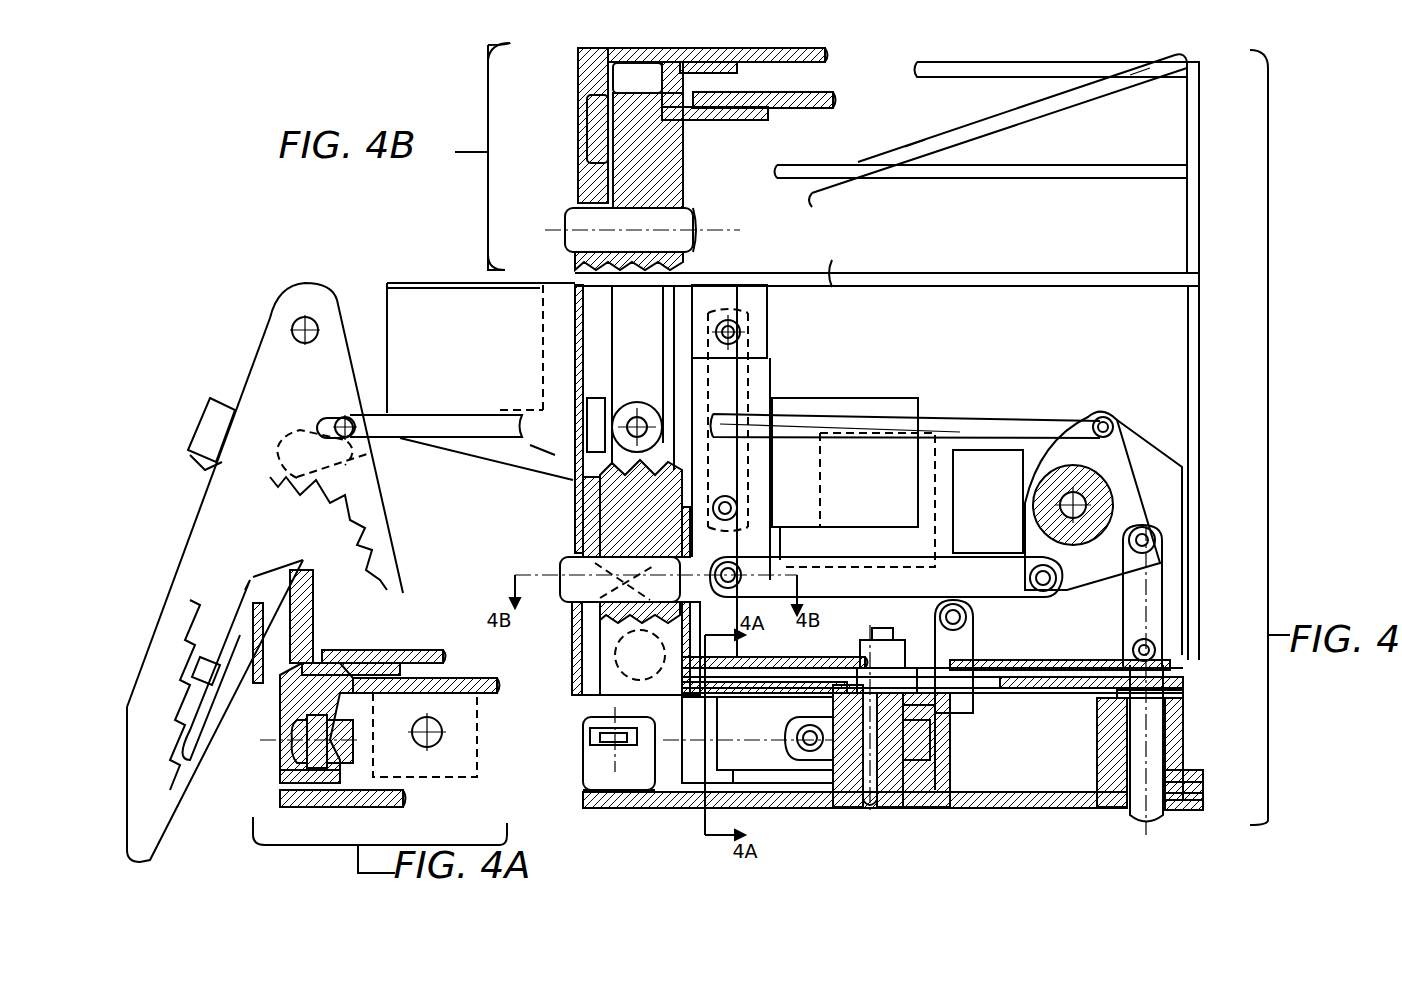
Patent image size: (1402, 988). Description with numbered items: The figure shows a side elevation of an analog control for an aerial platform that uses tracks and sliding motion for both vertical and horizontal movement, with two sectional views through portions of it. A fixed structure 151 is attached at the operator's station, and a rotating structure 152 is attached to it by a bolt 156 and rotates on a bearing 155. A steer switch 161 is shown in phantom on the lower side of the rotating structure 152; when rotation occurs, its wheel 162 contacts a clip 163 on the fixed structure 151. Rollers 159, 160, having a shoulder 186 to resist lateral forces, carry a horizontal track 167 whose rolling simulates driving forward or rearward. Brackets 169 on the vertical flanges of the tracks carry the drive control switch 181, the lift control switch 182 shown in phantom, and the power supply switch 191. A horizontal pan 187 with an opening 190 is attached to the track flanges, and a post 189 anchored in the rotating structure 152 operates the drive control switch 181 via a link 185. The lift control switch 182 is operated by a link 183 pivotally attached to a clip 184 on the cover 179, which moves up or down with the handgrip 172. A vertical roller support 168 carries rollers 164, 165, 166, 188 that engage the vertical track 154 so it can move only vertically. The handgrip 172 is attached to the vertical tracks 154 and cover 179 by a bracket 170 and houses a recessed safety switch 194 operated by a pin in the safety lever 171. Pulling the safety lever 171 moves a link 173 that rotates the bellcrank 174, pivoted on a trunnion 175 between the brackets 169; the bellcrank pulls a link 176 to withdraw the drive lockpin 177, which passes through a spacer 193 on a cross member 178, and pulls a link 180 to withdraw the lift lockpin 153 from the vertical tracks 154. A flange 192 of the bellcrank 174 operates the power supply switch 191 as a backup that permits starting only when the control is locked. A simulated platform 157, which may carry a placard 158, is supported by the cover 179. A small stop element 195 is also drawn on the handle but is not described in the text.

In FIG. 4, the fixed structure 151 is at (1000, 810).
In FIG. 4A, the fixed structure 151 is at (325, 810).
In FIG. 4, the rotating structure 152 is at (965, 795).
In FIG. 4B, the lift lockpin 153 is at (563, 226).
In FIG. 4, the lift lockpin 153 is at (565, 597).
In FIG. 4B, the vertical tracks 154 is at (577, 108).
In FIG. 4, the vertical tracks 154 is at (577, 491).
In FIG. 4, the bearing 155 is at (905, 800).
In FIG. 4, the bolt 156 is at (880, 810).
In FIG. 4, the simulated platform 157 is at (1185, 228).
In FIG. 4, the placard 158 is at (995, 112).
In FIG. 4, the roller 159 is at (1085, 790).
In FIG. 4, the roller 160 is at (790, 760).
In FIG. 4A, the roller 160 is at (350, 773).
In FIG. 4, the steer switch 161 is at (770, 800).
In FIG. 4A, the steer switch 161 is at (430, 777).
In FIG. 4, the wheel 162 is at (590, 755).
In FIG. 4, the clip 163 is at (580, 785).
In FIG. 4B, the rollers 164 is at (688, 133).
In FIG. 4, the rollers 164 is at (580, 663).
In FIG. 4, the rollers 165 is at (625, 402).
In FIG. 4B, the rollers 166 is at (585, 168).
In FIG. 4, the rollers 166 is at (585, 568).
In FIG. 4, the horizontal track 167 is at (690, 795).
In FIG. 4A, the horizontal track 167 is at (280, 758).
In FIG. 4B, the vertical roller support 168 is at (683, 168).
In FIG. 4, the vertical roller support 168 is at (600, 512).
In FIG. 4B, the bracket 169 is at (825, 110).
In FIG. 4, the bracket 169 is at (833, 415).
In FIG. 4, the bracket 170 is at (455, 280).
In FIG. 4, the safety lever 171 is at (395, 497).
In FIG. 4, the handgrip 172 is at (195, 535).
In FIG. 4, the link 173 is at (410, 440).
In FIG. 4, the bellcrank 174 is at (1125, 422).
In FIG. 4, the trunnion 175 is at (1073, 545).
In FIG. 4, the link 176 is at (1120, 628).
In FIG. 4, the drive lockpin 177 is at (1152, 822).
In FIG. 4, the cross member 178 is at (1185, 722).
In FIG. 4, the cover 179 is at (748, 285).
In FIG. 4A, the cover 179 is at (250, 665).
In FIG. 4, the link 180 is at (878, 555).
In FIG. 4, the drive control switch 181 is at (795, 412).
In FIG. 4, the lift control switch 182 is at (880, 430).
In FIG. 4, the link 183 is at (748, 378).
In FIG. 4, the clip 184 is at (770, 325).
In FIG. 4, the link 185 is at (877, 592).
In FIG. 4A, the shoulder 186 is at (280, 785).
In FIG. 4, the horizontal pan 187 is at (752, 662).
In FIG. 4A, the horizontal pan 187 is at (385, 650).
In FIG. 4, the rollers 188 is at (580, 470).
In FIG. 4, the post 189 is at (975, 640).
In FIG. 4, the opening 190 is at (1068, 668).
In FIG. 4, the power supply switch 191 is at (995, 450).
In FIG. 4, the flange 192 is at (1040, 470).
In FIG. 4, the spacer 193 is at (1205, 790).
In FIG. 4A, the safety switch 194 is at (195, 725).
In FIG. 4, the stop 195 is at (200, 412).